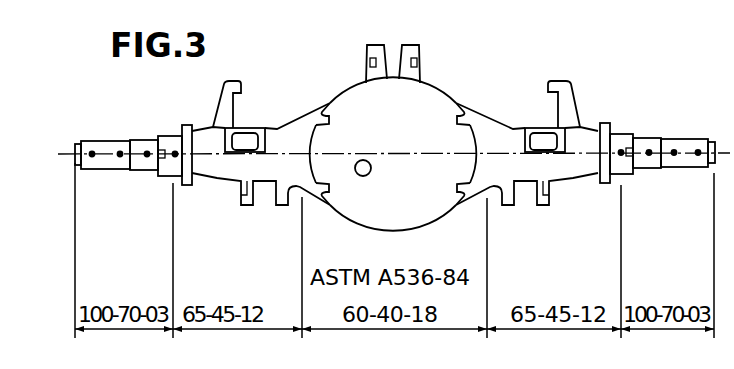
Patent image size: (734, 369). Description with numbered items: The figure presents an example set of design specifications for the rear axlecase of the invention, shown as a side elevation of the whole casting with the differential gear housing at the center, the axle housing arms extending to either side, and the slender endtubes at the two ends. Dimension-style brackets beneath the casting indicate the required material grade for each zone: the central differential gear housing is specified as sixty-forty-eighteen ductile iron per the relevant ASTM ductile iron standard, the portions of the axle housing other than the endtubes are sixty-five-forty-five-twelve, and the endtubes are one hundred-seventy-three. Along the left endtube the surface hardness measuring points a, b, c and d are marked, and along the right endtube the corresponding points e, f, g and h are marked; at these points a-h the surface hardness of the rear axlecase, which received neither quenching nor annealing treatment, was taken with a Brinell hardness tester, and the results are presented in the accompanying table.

The hardness measuring point a is at (92, 136).
The hardness measuring point b is at (121, 136).
The hardness measuring point c is at (147, 136).
The hardness measuring point d is at (173, 135).
The hardness measuring point e is at (621, 132).
The hardness measuring point f is at (650, 132).
The hardness measuring point g is at (673, 132).
The hardness measuring point h is at (697, 132).